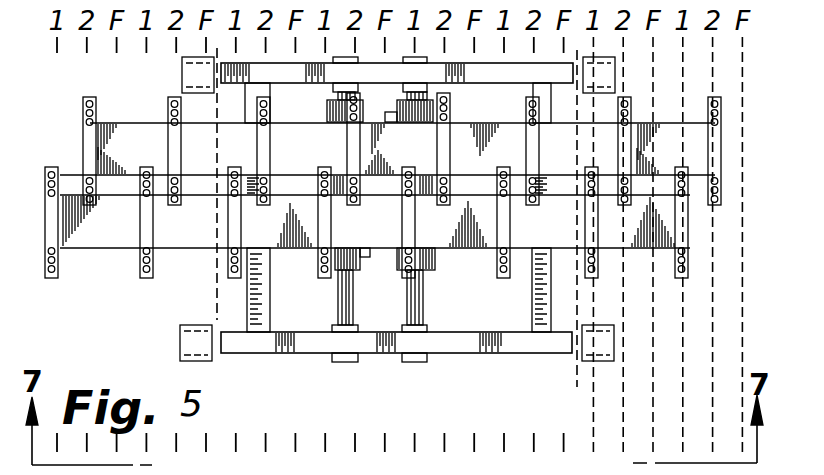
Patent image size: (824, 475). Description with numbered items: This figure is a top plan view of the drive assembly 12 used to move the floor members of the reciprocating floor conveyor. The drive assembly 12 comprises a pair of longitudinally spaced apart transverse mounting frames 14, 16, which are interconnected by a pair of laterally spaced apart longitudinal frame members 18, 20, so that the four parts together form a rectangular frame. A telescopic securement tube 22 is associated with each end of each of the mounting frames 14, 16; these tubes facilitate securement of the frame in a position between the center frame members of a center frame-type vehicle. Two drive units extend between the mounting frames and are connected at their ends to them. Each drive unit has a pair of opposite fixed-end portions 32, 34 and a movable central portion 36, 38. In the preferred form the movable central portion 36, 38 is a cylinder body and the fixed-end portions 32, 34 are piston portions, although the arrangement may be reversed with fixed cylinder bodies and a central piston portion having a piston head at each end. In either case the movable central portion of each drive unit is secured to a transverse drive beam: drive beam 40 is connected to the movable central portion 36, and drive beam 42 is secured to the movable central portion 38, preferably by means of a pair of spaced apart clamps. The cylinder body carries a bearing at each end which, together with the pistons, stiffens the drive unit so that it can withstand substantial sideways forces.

The drive assembly 12 is at (315, 358).
The transverse mounting frame 14 is at (485, 72).
The transverse mounting frame 16 is at (460, 343).
The longitudinal frame member 18 is at (270, 300).
The longitudinal frame member 20 is at (532, 308).
The telescopic securement tube 22 is at (182, 73).
The fixed-end portion 32 is at (382, 333).
The fixed-end portion 34 is at (360, 88).
The movable central portion 36 is at (345, 258).
The movable central portion 38 is at (435, 262).
The drive beam 40 is at (112, 233).
The drive beam 42 is at (118, 142).